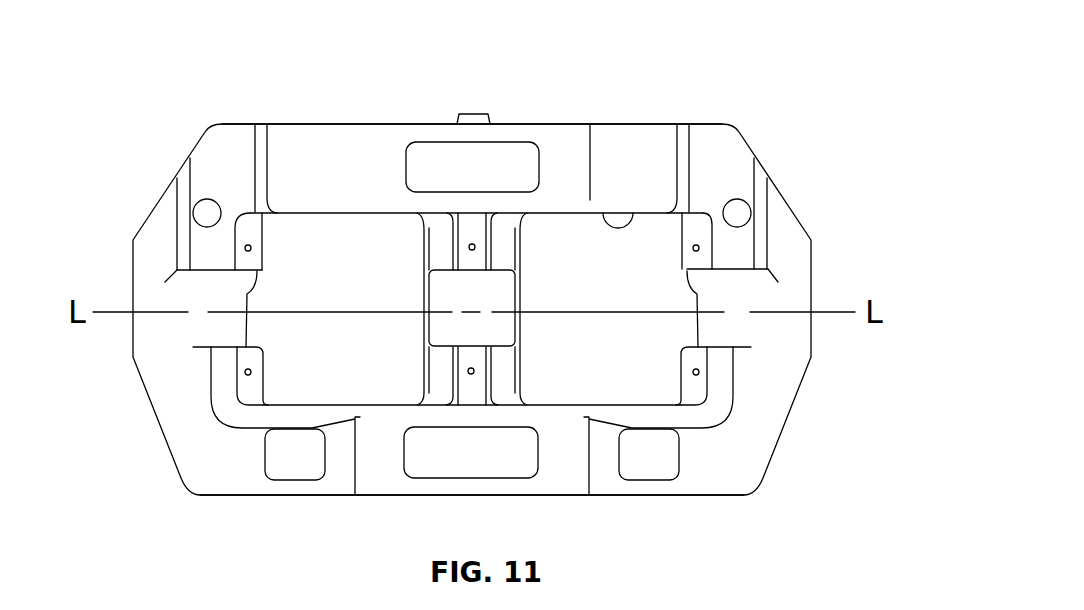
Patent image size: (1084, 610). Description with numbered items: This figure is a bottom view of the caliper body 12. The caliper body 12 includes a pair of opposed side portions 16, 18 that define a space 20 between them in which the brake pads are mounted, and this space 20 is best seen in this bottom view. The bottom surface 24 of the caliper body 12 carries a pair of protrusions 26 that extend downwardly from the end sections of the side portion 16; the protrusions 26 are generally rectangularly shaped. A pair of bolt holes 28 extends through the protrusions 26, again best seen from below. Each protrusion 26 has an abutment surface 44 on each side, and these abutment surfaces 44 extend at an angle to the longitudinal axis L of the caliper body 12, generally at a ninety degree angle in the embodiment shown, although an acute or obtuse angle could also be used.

The caliper body 12 is at (812, 272).
The side portion 16 is at (323, 122).
The side portion 18 is at (685, 497).
The space 20 is at (630, 210).
The bottom surface 24 is at (372, 138).
The protrusion 26 is at (218, 147).
The bolt hole 28 is at (753, 215).
The abutment surface 44 is at (170, 203).